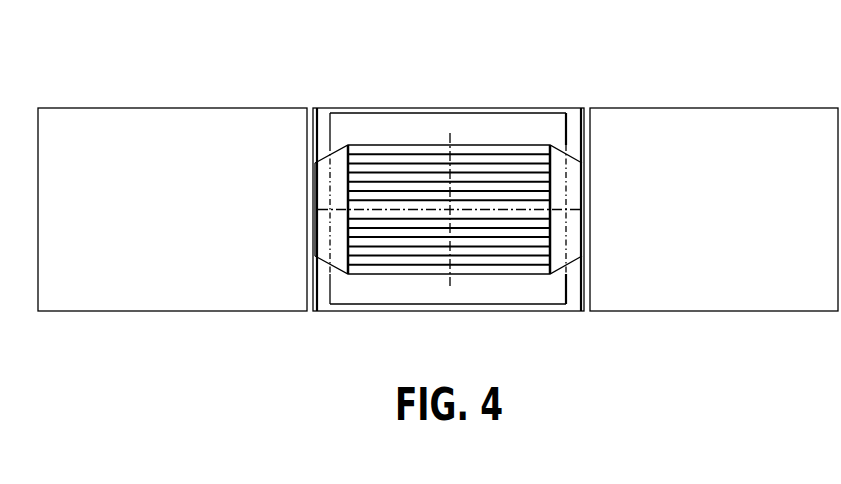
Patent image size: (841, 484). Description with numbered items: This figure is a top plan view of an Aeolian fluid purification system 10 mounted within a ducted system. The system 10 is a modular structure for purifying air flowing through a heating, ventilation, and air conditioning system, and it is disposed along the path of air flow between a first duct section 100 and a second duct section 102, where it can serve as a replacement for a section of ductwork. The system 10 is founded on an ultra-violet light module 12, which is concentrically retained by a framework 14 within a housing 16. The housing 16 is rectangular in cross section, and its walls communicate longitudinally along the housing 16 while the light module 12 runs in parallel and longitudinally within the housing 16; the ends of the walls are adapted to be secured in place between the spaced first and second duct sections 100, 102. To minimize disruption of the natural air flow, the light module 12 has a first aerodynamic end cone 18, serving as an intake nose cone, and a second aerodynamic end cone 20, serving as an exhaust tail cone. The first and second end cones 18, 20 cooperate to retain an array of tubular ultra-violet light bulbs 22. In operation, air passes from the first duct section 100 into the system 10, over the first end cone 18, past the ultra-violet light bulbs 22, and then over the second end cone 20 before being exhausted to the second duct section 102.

The Aeolian fluid purification system 10 is at (553, 98).
The ultra-violet light module 12 is at (390, 283).
The framework 14 is at (321, 135).
The housing 16 is at (392, 123).
The first aerodynamic end cone 18 is at (583, 163).
The second aerodynamic end cone 20 is at (314, 229).
The tubular ultra-violet light bulbs 22 is at (500, 155).
The first duct section 100 is at (729, 108).
The second duct section 102 is at (177, 108).